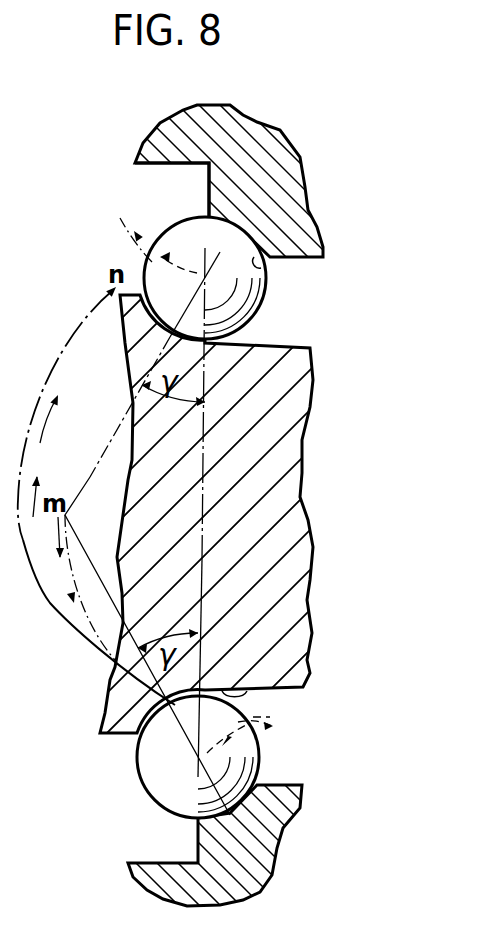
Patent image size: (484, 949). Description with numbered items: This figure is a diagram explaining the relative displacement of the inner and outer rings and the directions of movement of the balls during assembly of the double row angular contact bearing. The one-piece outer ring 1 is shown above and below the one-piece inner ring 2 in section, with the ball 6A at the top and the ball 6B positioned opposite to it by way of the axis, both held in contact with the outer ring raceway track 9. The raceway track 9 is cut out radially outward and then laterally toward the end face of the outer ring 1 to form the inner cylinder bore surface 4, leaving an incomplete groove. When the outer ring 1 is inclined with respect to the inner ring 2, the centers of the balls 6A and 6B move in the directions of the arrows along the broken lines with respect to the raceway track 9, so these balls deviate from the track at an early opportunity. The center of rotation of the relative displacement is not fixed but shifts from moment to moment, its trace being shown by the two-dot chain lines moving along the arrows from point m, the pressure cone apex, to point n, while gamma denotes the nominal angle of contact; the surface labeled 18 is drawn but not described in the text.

The outer ring 1 is at (263, 153).
The inner cylinder bore surface 4 is at (152, 168).
The outer ring raceway track 9 is at (255, 261).
The ball 6A is at (243, 297).
The inner ring 2 is at (267, 467).
The raceway surface 18 is at (224, 694).
The ball 6B is at (258, 768).